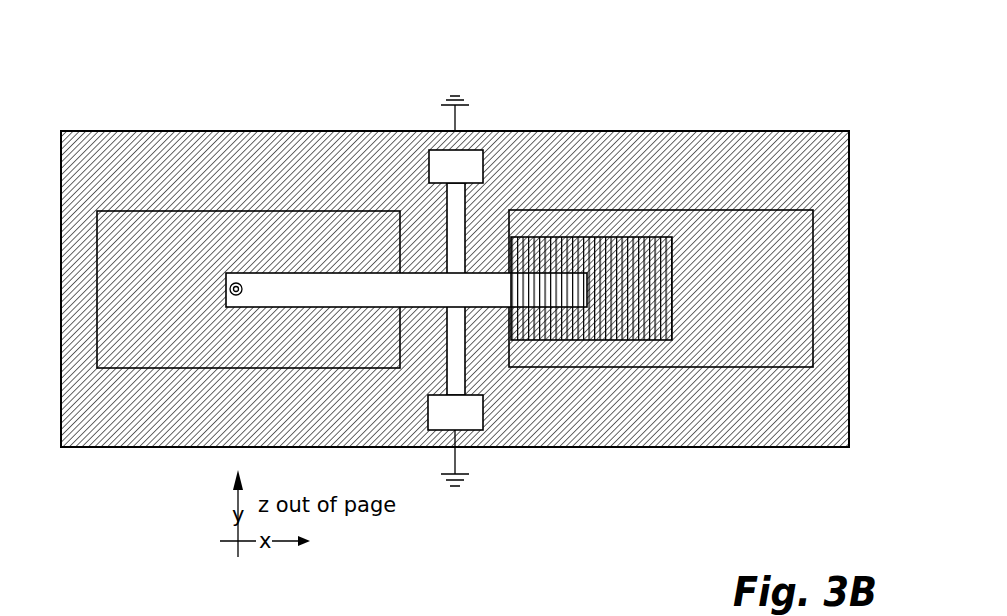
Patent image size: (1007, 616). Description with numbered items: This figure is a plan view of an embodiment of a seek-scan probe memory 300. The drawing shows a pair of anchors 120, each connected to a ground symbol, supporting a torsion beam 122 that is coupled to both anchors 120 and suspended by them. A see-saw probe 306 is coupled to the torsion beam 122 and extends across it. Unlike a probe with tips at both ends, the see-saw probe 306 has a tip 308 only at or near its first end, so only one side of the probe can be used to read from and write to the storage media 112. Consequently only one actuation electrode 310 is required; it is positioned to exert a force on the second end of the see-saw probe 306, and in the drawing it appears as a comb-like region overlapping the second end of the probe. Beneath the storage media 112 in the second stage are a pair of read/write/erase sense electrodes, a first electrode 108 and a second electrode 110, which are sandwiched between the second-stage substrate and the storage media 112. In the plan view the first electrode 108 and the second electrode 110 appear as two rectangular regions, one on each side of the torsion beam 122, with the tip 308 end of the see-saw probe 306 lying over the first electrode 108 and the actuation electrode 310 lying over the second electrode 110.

The memory 300 is at (457, 267).
The first electrode 108 is at (137, 217).
The second electrode 110 is at (728, 218).
The storage media 112 is at (774, 437).
The anchors 120 is at (465, 168).
The torsion beam 122 is at (455, 227).
The see-saw probe 306 is at (406, 290).
The tip 308 is at (238, 284).
The actuation electrode 310 is at (280, 335).